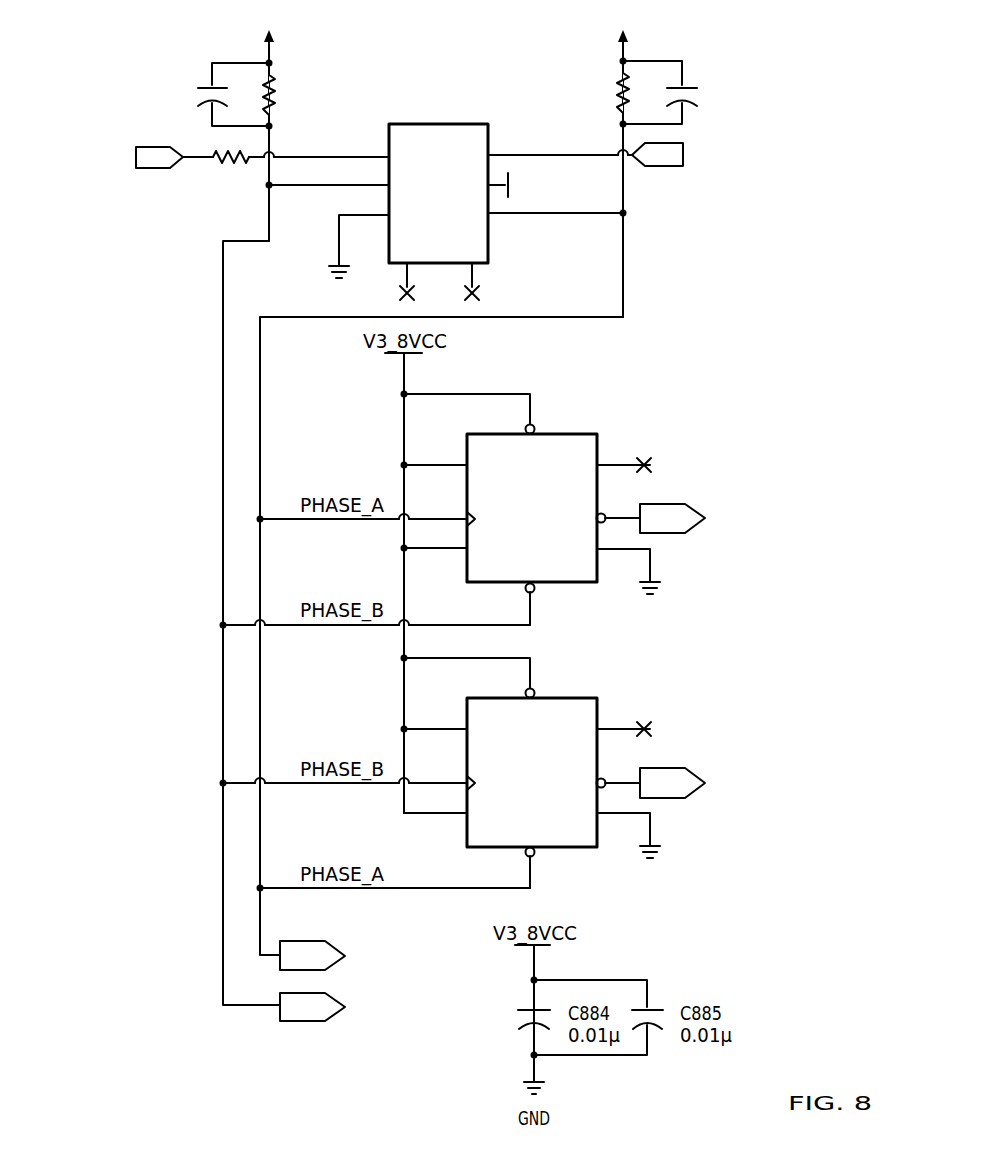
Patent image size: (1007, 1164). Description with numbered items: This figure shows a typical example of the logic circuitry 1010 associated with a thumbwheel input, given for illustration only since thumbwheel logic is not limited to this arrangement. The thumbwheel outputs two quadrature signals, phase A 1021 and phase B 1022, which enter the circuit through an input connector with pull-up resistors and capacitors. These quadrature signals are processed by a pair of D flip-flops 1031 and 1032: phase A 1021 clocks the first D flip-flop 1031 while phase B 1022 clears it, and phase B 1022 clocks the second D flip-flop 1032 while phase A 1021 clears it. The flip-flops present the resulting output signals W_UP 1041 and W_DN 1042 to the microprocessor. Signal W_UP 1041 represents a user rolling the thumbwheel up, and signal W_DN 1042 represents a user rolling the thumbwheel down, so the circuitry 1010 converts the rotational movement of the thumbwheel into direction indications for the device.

The logic circuitry 1010 is at (684, 30).
The D flip-flop 1031 is at (574, 432).
The D flip-flop 1032 is at (577, 697).
The W_UP signal 1041 is at (733, 531).
The W_DN signal 1042 is at (733, 796).
The phase A signal 1021 is at (418, 949).
The phase B signal 1022 is at (420, 1022).